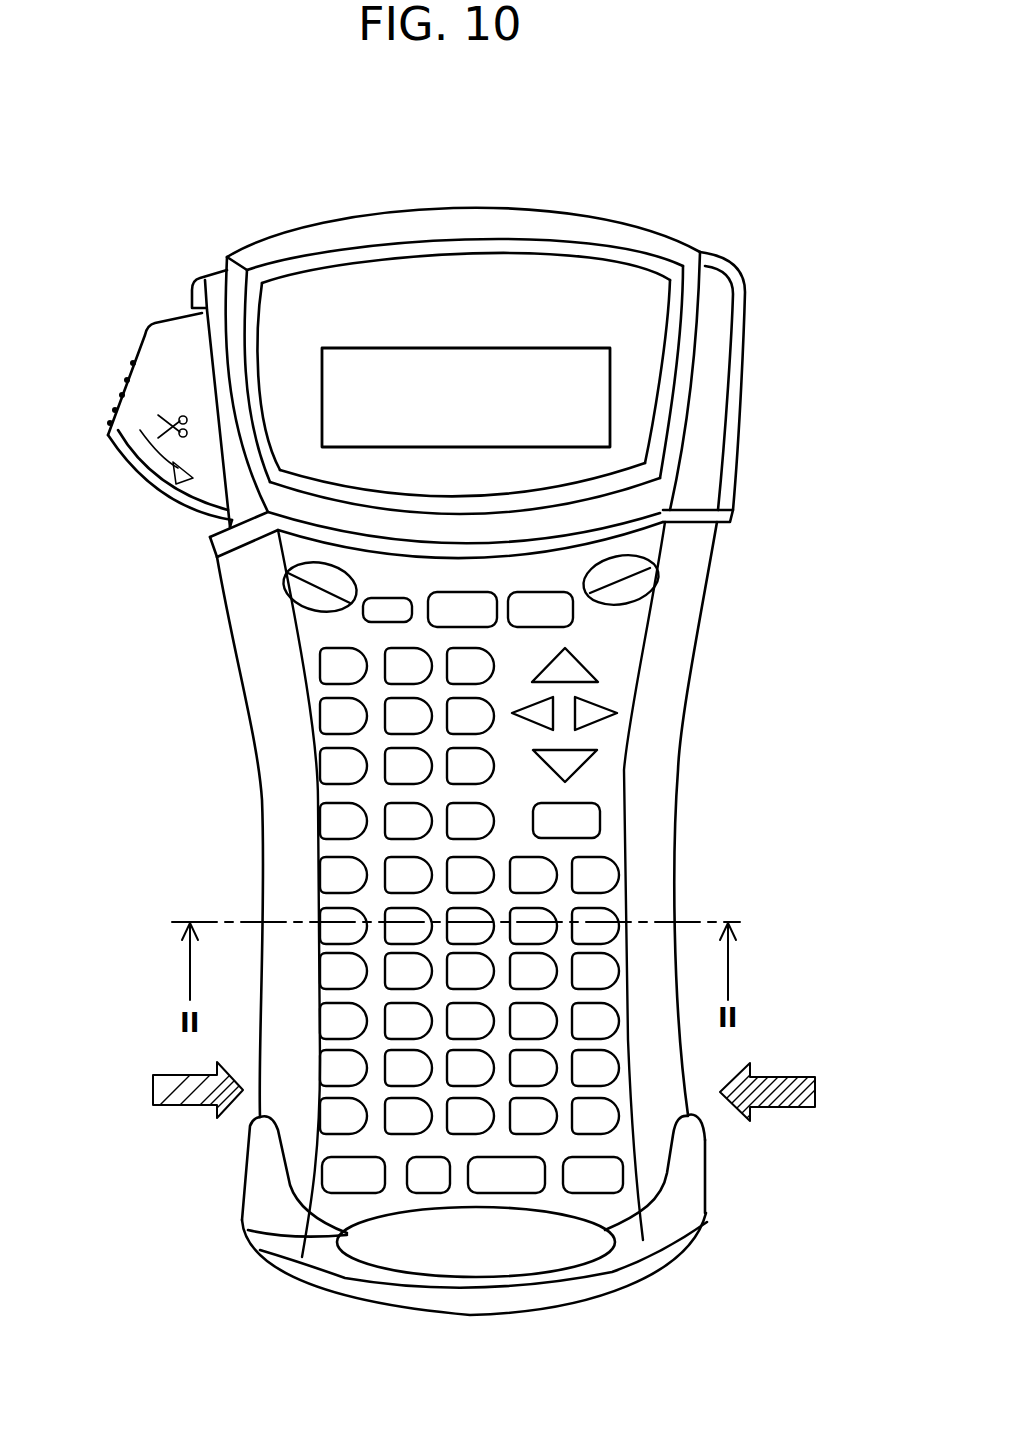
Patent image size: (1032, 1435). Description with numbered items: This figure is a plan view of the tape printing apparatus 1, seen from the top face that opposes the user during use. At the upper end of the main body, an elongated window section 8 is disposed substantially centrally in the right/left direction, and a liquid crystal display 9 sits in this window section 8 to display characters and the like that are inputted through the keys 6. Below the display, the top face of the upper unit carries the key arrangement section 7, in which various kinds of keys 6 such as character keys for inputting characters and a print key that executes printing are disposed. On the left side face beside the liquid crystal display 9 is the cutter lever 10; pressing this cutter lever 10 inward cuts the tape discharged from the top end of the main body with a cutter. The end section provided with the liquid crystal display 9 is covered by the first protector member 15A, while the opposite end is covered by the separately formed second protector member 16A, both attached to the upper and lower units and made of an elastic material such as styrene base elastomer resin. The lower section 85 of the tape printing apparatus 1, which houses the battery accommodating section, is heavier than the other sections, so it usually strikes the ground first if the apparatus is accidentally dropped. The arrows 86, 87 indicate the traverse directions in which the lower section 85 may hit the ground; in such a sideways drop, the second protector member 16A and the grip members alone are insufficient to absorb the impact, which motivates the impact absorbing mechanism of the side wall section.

The tape printing apparatus 1 is at (706, 203).
The keys 6 is at (391, 694).
The key arrangement section 7 is at (361, 889).
The window section 8 is at (560, 280).
The liquid crystal display 9 is at (577, 403).
The cutter lever 10 is at (153, 363).
The first protector member 15A is at (718, 327).
The second protector member 16A is at (688, 1203).
The lower section 85 is at (712, 1153).
The arrow 86 is at (193, 1107).
The arrow 87 is at (777, 1075).